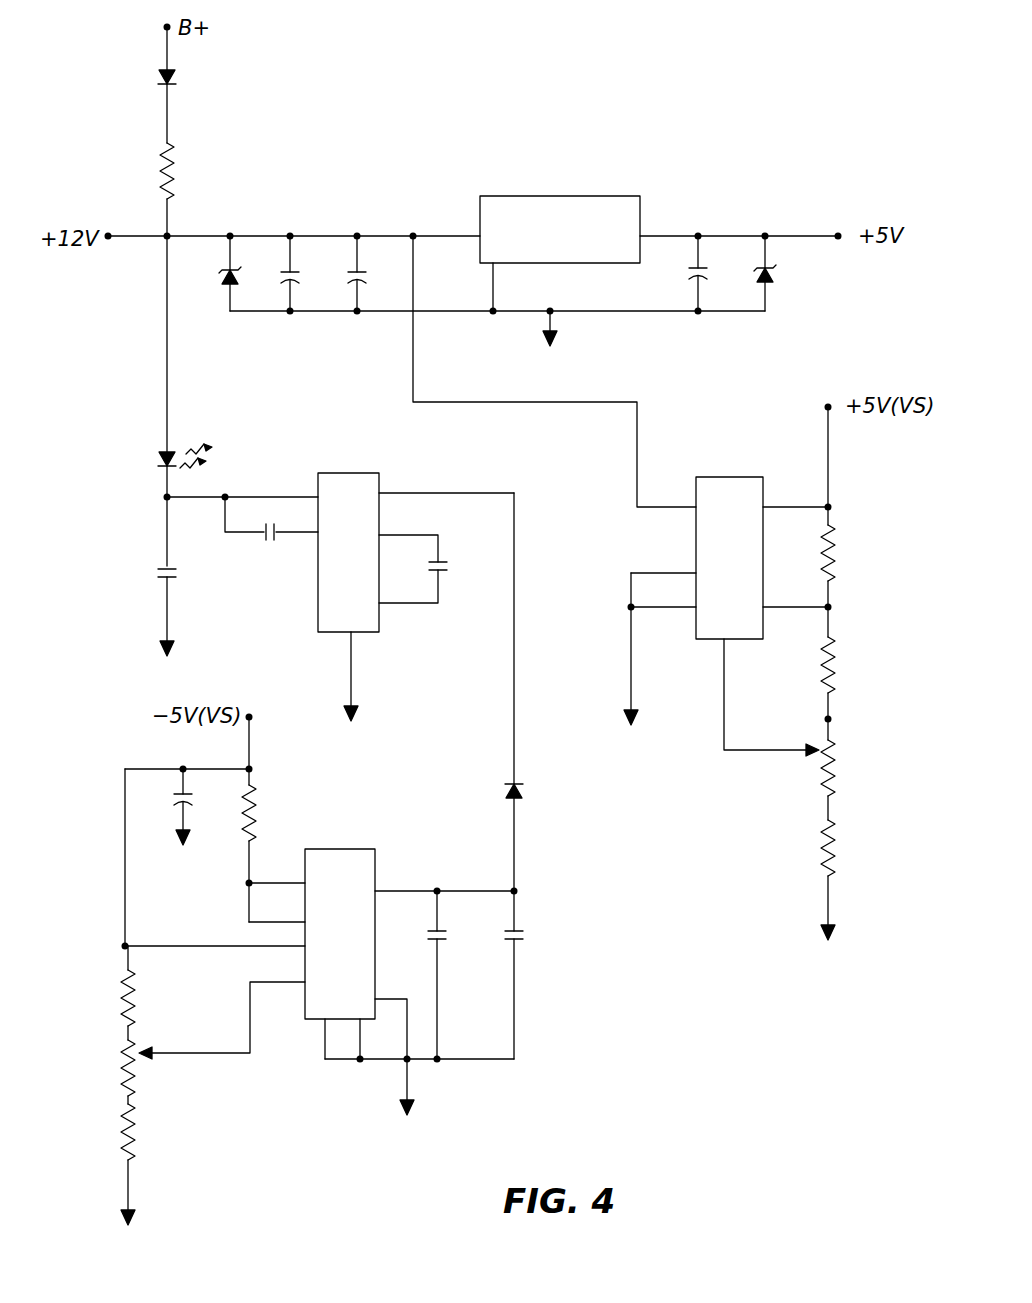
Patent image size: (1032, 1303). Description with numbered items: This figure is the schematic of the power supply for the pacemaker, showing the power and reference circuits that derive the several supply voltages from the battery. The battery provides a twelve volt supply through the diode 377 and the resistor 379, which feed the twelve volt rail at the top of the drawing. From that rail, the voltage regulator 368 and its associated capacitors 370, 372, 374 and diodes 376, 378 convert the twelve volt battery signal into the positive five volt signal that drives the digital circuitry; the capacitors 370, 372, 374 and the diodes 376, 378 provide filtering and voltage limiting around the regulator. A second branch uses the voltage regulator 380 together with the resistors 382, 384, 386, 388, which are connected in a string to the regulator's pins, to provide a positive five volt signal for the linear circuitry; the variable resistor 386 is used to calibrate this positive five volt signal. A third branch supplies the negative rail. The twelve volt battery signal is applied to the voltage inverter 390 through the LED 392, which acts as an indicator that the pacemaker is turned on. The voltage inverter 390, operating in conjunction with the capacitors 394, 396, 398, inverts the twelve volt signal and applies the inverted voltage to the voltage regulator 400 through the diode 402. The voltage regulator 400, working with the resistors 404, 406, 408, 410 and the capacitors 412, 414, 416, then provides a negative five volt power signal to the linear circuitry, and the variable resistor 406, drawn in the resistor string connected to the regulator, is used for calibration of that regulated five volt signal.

The voltage regulator 368 is at (527, 197).
The capacitor 370 is at (297, 265).
The capacitor 372 is at (363, 262).
The capacitor 374 is at (705, 262).
The diode 376 is at (237, 262).
The diode 377 is at (178, 80).
The diode 378 is at (777, 274).
The resistor 379 is at (177, 172).
The voltage regulator 380 is at (724, 476).
The resistor 382 is at (840, 542).
The resistor 384 is at (840, 668).
The variable resistor 386 is at (840, 760).
The resistor 388 is at (838, 860).
The voltage inverter 390 is at (345, 472).
The LED 392 is at (156, 450).
The capacitor 394 is at (262, 541).
The capacitor 396 is at (446, 574).
The capacitor 398 is at (163, 568).
The voltage regulator 400 is at (345, 848).
The diode 402 is at (525, 792).
The resistor 404 is at (115, 1000).
The variable resistor 406 is at (118, 1070).
The resistor 408 is at (121, 1137).
The resistor 410 is at (267, 815).
The capacitor 412 is at (178, 806).
The capacitor 414 is at (443, 945).
The capacitor 416 is at (525, 940).